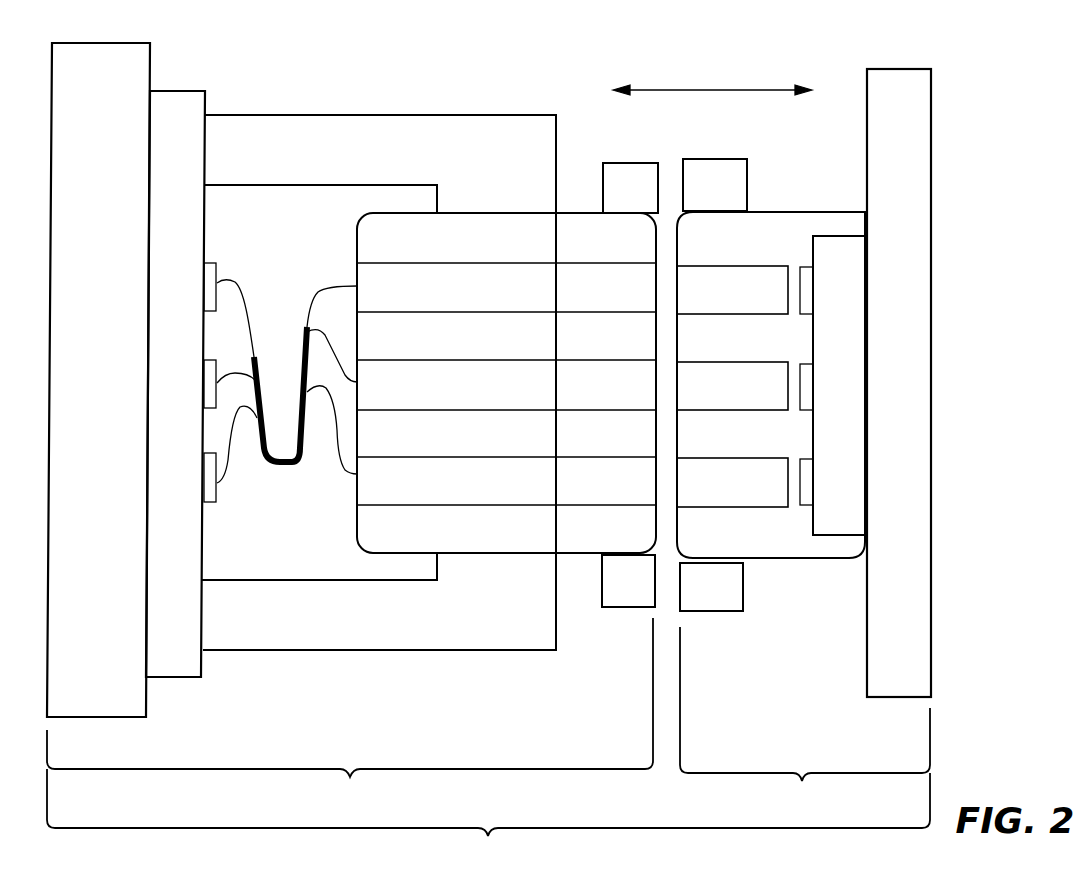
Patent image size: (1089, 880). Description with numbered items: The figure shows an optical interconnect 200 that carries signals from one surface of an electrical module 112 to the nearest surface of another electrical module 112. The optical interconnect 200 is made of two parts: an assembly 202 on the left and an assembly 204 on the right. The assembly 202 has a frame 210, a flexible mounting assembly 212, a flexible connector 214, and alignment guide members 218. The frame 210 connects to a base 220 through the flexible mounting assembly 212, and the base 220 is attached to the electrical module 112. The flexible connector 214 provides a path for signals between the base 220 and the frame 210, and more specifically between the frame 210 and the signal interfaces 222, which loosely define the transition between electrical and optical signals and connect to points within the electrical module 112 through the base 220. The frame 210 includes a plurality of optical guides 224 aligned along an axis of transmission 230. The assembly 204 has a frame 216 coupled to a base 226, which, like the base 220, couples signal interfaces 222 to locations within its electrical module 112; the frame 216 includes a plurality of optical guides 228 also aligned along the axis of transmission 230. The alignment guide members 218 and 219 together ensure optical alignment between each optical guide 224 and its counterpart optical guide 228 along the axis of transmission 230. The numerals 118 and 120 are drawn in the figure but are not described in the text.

The electrical module 112 is at (489, 380).
The first module 118 is at (178, 405).
The second module 120 is at (829, 476).
The optical interconnect 200 is at (488, 819).
The assembly 202 is at (350, 715).
The assembly 204 is at (805, 720).
The frame 210 is at (509, 557).
The flexible mounting assembly 212 is at (273, 114).
The flexible connector 214 is at (288, 470).
The frame 216 is at (832, 565).
The alignment guide members 218 is at (630, 385).
The alignment guide members 219 is at (713, 385).
The base 220 is at (175, 384).
The signal interfaces 222 is at (208, 470).
The optical guides 224 is at (506, 384).
The base 226 is at (840, 385).
The optical guides 228 is at (732, 386).
The axis of transmission 230 is at (748, 90).